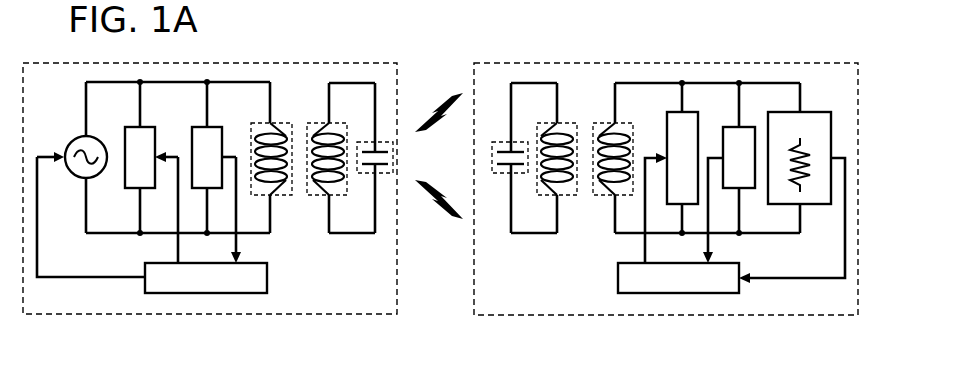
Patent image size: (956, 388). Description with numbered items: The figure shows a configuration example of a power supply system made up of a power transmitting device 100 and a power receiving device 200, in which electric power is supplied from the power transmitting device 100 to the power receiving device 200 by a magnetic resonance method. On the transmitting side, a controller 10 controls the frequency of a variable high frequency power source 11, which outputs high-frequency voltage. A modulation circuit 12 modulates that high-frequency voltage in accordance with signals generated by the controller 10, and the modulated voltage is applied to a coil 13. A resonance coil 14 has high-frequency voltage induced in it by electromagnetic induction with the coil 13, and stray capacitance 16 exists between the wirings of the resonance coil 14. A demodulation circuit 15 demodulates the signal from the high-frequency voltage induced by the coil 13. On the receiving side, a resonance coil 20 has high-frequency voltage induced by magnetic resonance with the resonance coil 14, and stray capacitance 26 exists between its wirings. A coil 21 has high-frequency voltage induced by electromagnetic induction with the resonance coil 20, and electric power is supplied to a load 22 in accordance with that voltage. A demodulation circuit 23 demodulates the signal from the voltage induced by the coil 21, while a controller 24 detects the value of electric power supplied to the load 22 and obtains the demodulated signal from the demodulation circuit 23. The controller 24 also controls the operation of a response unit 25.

The power transmitting device 100 is at (213, 213).
The controller 10 is at (206, 278).
The variable high frequency power source 11 is at (78, 137).
The modulation circuit 12 is at (140, 157).
The coil 13 is at (279, 180).
The resonance coil 14 is at (320, 138).
The demodulation circuit 15 is at (207, 157).
The stray capacitance 16 is at (366, 132).
The power receiving device 200 is at (666, 214).
The resonance coil 20 is at (564, 179).
The coil 21 is at (604, 138).
The load 22 is at (799, 158).
The demodulation circuit 23 is at (739, 157).
The controller 24 is at (678, 278).
The response unit 25 is at (682, 158).
The stray capacitance 26 is at (503, 132).